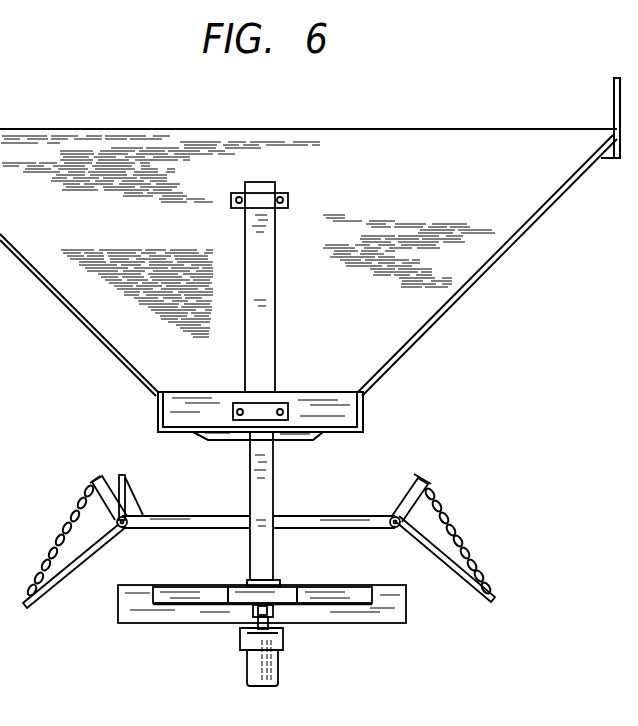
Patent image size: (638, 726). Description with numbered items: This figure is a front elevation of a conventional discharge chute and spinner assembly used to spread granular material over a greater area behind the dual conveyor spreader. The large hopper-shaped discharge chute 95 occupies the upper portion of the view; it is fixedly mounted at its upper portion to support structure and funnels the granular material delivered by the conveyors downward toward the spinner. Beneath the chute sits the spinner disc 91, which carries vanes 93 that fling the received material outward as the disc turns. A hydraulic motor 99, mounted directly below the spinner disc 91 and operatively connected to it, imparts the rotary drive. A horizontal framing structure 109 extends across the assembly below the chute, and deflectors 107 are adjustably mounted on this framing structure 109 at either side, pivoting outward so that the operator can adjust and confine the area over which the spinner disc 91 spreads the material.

The discharge chute 95 is at (476, 167).
The framing structure 109 is at (330, 512).
The deflectors 107 is at (73, 565).
The vanes 93 is at (313, 592).
The spinner disc 91 is at (316, 605).
The hydraulic motor 99 is at (248, 662).